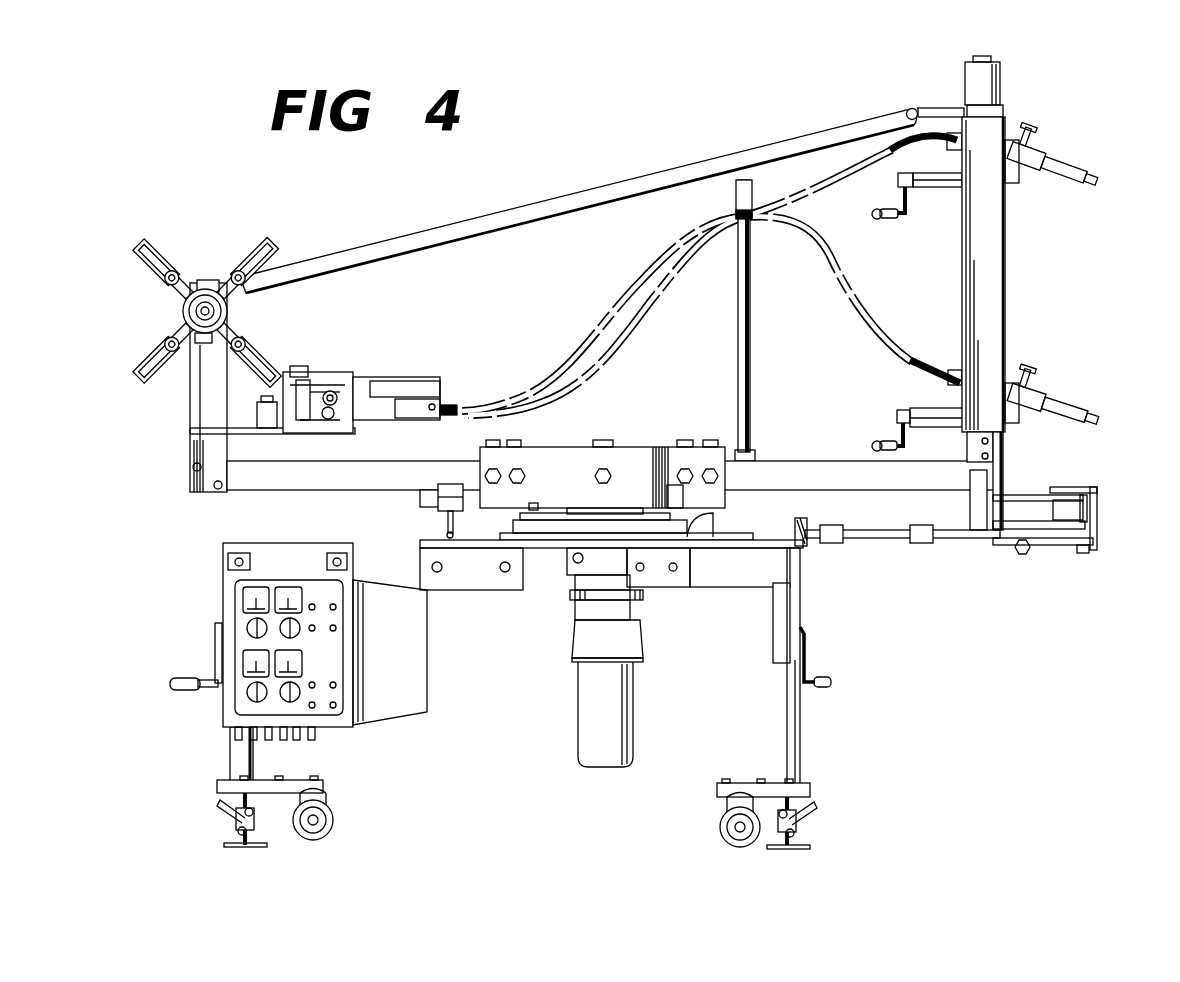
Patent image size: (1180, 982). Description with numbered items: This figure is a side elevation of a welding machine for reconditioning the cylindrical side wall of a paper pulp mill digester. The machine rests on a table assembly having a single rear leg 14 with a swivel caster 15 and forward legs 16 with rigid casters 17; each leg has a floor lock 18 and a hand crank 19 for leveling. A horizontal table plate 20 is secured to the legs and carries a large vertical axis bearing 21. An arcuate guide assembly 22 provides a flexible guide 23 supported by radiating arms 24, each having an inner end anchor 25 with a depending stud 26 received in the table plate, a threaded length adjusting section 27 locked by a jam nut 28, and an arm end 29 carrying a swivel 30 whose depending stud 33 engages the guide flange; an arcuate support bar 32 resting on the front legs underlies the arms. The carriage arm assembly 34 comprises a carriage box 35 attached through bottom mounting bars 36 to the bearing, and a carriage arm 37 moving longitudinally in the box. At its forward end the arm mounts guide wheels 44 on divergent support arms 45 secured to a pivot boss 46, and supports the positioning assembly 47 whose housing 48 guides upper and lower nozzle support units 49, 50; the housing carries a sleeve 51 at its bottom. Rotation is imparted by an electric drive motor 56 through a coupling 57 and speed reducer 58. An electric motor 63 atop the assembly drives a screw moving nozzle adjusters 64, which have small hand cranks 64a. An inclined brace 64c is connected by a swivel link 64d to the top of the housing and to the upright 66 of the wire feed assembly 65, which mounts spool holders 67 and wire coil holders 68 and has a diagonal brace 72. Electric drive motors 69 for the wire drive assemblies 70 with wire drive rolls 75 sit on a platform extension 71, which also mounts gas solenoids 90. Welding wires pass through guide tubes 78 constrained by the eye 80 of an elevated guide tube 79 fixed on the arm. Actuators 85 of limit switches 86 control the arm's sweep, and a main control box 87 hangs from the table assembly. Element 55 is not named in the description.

The rear leg 14 is at (232, 760).
The swivel caster 15 is at (333, 808).
The forward legs 16 is at (801, 735).
The rigid casters 17 is at (720, 830).
The floor lock 18 is at (228, 832).
The hand cranks 19 is at (184, 678).
The table plate 20 is at (562, 552).
The vertical axis bearing 21 is at (710, 541).
The arcuate guide assembly 22 is at (1091, 484).
The flexible guide 23 is at (1098, 516).
The radiating arms 24 is at (879, 539).
The inner end anchors 25 is at (778, 530).
The depending studs 26 is at (790, 550).
The threaded length adjusting section 27 is at (814, 543).
The jam nut 28 is at (801, 536).
The arm end 29 is at (1048, 537).
The swivel 30 is at (1098, 539).
The arcuate support bar 32 is at (1022, 556).
The depending studs 33 is at (1085, 553).
The carriage arm assembly 34 is at (663, 445).
The carriage box 35 is at (522, 457).
The bottom mounting bars 36 is at (530, 503).
The carriage arm 37 is at (828, 470).
The guide wheels 44 is at (1093, 504).
The support arms 45 is at (1017, 497).
The pivot boss 46 is at (980, 522).
The positioning assembly 47 is at (1012, 122).
The housing 48 is at (963, 250).
The upper welding nozzle support unit 49 is at (1050, 160).
The lower welding nozzle support unit 50 is at (1048, 395).
The sleeve 51 is at (1001, 457).
The mast foot block 55 is at (983, 455).
The electric drive motor 56 is at (633, 703).
The coupling 57 is at (593, 645).
The speed reducer 58 is at (633, 604).
The electric motor 63 is at (966, 82).
The nozzle adjusters 64 is at (950, 187).
The hand cranks 64a is at (900, 200).
The inclined brace 64c is at (612, 185).
The swivel link 64d is at (935, 108).
The wire feed assembly 65 is at (205, 278).
The upright 66 is at (198, 392).
The spool holders 67 is at (196, 309).
The wire coil holders 68 is at (250, 275).
The electric drive motors 69 is at (413, 383).
The wire drive assemblies 70 is at (327, 367).
The platform extension 71 is at (240, 437).
The diagonal brace 72 is at (240, 327).
The wire drive rolls 75 is at (334, 392).
The guide tubes 78 is at (613, 357).
The elevated guide tube 79 is at (752, 338).
The eye 80 is at (740, 192).
The actuators 85 is at (448, 526).
The limit switches 86 is at (433, 496).
The main control box 87 is at (240, 618).
The gas solenoids 90 is at (256, 413).